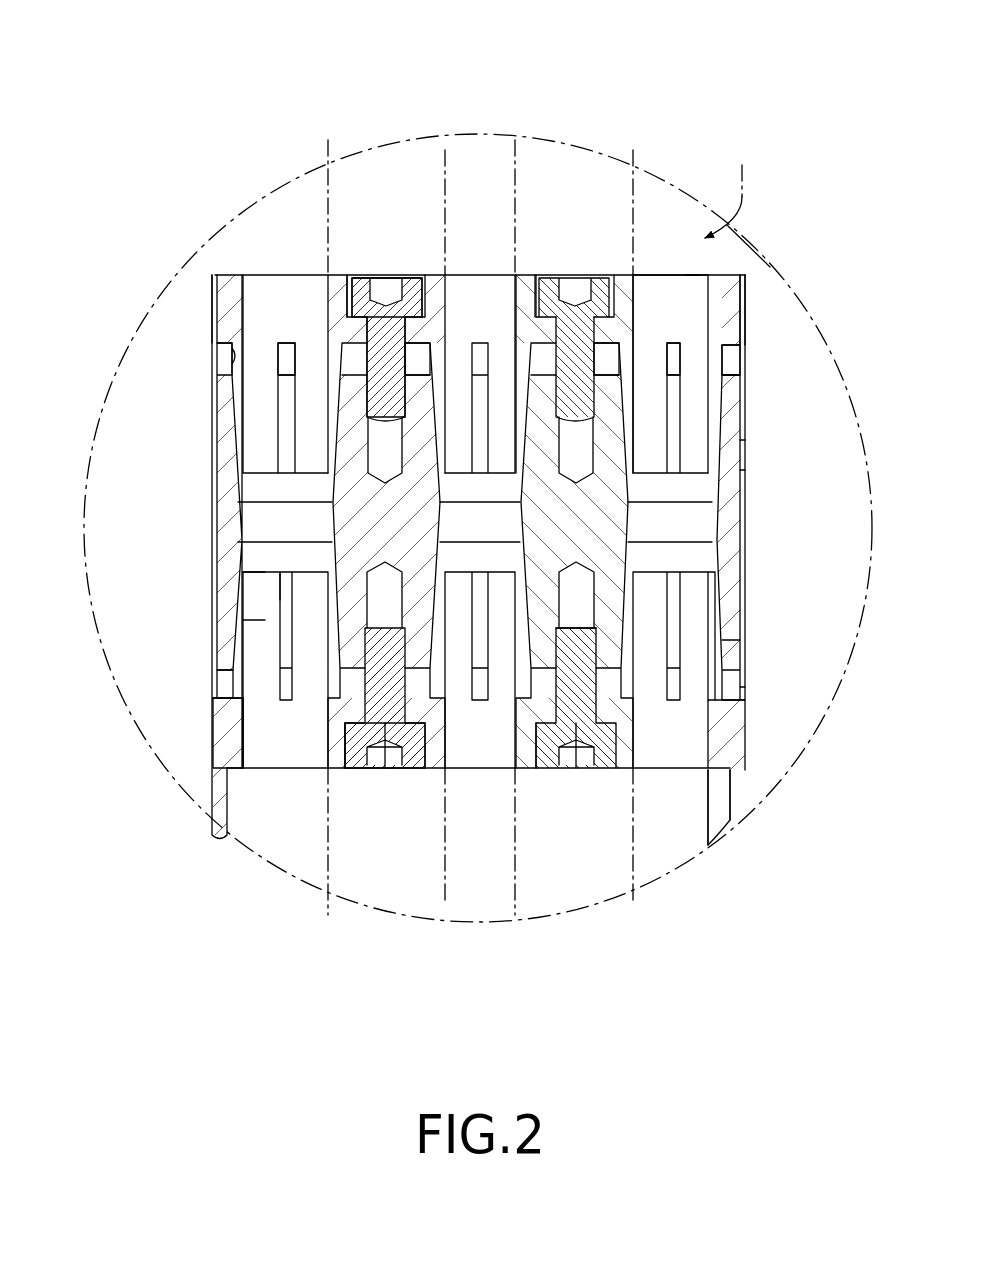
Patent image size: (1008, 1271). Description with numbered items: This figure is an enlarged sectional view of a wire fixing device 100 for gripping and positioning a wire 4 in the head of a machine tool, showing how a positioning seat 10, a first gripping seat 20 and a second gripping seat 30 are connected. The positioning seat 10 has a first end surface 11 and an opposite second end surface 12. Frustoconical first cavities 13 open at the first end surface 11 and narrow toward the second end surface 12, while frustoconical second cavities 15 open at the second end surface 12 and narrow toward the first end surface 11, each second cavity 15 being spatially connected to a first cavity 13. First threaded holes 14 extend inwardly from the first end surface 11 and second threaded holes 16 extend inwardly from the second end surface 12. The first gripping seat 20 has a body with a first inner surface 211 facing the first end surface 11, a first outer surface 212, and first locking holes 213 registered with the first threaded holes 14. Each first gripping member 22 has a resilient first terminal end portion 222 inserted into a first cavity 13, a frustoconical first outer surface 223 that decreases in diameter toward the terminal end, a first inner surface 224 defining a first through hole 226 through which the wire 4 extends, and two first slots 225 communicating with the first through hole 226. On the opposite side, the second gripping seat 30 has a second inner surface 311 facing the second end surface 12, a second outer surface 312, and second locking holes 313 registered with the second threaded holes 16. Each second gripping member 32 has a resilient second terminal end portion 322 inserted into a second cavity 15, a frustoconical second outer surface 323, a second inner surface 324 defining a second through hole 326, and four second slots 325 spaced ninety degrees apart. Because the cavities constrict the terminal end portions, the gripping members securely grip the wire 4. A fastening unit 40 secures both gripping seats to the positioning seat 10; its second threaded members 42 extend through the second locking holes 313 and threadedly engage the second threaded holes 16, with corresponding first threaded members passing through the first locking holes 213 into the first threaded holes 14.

The wire 4 is at (320, 203).
The positioning seat 10 is at (752, 558).
The wire fixing device 100 is at (210, 414).
The first end surface 11 is at (722, 410).
The second end surface 12 is at (747, 687).
The first cavity 13 is at (240, 430).
The first threaded hole 14 is at (410, 400).
The second cavity 15 is at (723, 640).
The second threaded hole 16 is at (593, 655).
The first gripping seat 20 is at (773, 262).
The first gripping member 22 is at (750, 276).
The first inner surface 211 is at (220, 352).
The first outer surface 212 is at (216, 345).
The first locking hole 213 is at (347, 277).
The first terminal end portion 222 is at (742, 470).
The first outer surface 223 is at (745, 445).
The first inner surface 224 is at (688, 275).
The first slot 225 is at (735, 376).
The first through hole 226 is at (652, 300).
The second gripping seat 30 is at (745, 735).
The second inner surface 311 is at (748, 690).
The second outer surface 312 is at (732, 818).
The second locking hole 313 is at (426, 772).
The second gripping member 32 is at (262, 712).
The second terminal end portion 322 is at (242, 573).
The second outer surface 323 is at (232, 678).
The second inner surface 324 is at (262, 619).
The second slot 325 is at (285, 585).
The second through hole 326 is at (228, 697).
The fastening unit 40 is at (412, 270).
The second threaded member 42 is at (385, 768).